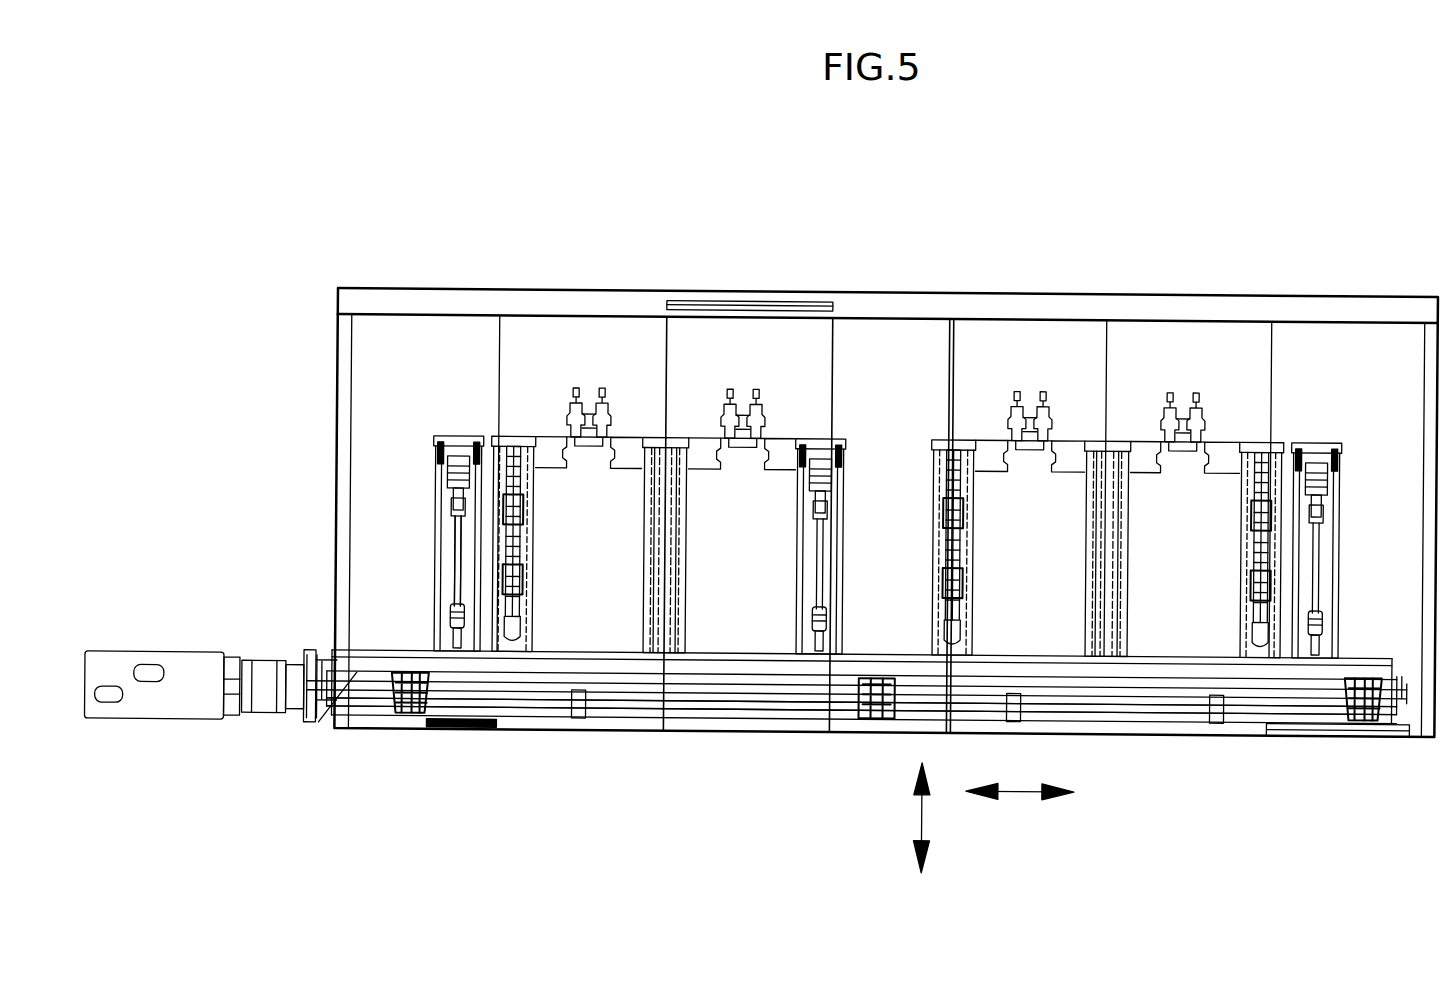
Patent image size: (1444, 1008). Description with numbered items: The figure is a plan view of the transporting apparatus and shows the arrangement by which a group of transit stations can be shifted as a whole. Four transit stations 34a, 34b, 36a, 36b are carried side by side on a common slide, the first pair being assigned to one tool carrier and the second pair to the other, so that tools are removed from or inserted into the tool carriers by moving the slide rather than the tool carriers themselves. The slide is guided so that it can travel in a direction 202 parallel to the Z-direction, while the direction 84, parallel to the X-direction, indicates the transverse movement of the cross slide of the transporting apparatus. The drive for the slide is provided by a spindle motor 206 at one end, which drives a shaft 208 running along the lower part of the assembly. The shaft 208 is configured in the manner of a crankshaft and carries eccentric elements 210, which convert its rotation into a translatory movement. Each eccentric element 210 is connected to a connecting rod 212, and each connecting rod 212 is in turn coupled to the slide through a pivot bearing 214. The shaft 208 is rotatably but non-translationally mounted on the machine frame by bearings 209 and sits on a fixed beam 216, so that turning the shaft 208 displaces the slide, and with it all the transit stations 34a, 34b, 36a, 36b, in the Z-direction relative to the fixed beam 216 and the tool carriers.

The transit station 34a is at (625, 386).
The transit station 34b is at (780, 390).
The transit station 36a is at (1062, 386).
The transit station 36b is at (1215, 390).
The pivot bearing 214 is at (440, 437).
The connecting rod 212 is at (458, 580).
The spindle motor 206 is at (190, 700).
The eccentric element 210 is at (480, 705).
The shaft 208 is at (632, 706).
The bearing 209 is at (1364, 715).
The fixed beam 216 is at (1256, 730).
The direction 202 is at (924, 805).
The direction 84 is at (1025, 788).